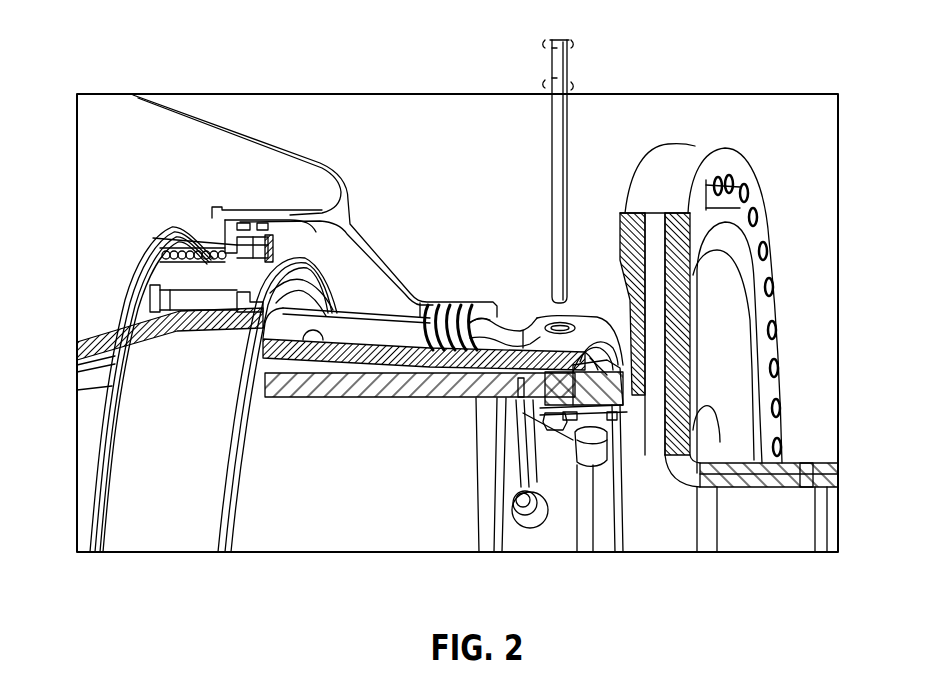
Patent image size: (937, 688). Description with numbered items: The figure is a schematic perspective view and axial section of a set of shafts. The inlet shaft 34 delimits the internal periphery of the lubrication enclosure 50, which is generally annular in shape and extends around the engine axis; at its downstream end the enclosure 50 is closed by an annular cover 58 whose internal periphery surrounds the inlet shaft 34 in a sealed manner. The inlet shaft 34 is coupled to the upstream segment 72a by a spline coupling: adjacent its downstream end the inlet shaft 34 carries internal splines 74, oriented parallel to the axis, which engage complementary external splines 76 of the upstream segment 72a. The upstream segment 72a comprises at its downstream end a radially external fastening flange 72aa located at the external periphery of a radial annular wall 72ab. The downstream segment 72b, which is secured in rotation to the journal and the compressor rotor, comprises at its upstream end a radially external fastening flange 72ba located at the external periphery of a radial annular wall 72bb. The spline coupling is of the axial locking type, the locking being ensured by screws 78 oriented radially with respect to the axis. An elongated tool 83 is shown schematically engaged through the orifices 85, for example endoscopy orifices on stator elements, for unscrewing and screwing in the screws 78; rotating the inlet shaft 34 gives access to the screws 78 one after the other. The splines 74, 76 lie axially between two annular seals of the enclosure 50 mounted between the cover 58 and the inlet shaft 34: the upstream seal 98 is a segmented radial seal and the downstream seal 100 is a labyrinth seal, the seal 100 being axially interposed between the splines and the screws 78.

The lubrication enclosure 50 is at (148, 160).
The annular cover 58 is at (318, 170).
The inlet shaft 34 is at (361, 338).
The internal splines 74 is at (393, 348).
The labyrinth seal 100 is at (452, 303).
The tool 83 is at (551, 61).
The orifices 85 is at (568, 80).
The radial annular wall 72ab is at (630, 178).
The radially external fastening flange 72aa is at (650, 168).
The radially external fastening flange 72ba is at (697, 162).
The radial annular wall 72bb is at (728, 298).
The segmented radial seal 98 is at (290, 252).
The external splines 76 is at (300, 340).
The upstream segment 72a is at (385, 385).
The screws 78 is at (607, 438).
The downstream segment 72b is at (752, 480).